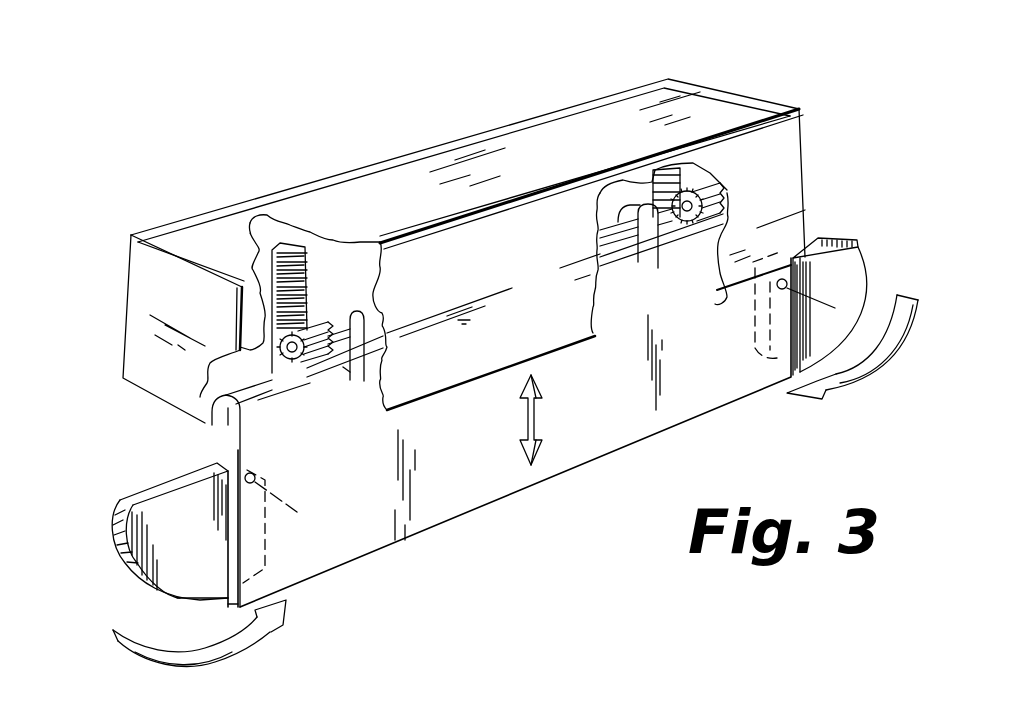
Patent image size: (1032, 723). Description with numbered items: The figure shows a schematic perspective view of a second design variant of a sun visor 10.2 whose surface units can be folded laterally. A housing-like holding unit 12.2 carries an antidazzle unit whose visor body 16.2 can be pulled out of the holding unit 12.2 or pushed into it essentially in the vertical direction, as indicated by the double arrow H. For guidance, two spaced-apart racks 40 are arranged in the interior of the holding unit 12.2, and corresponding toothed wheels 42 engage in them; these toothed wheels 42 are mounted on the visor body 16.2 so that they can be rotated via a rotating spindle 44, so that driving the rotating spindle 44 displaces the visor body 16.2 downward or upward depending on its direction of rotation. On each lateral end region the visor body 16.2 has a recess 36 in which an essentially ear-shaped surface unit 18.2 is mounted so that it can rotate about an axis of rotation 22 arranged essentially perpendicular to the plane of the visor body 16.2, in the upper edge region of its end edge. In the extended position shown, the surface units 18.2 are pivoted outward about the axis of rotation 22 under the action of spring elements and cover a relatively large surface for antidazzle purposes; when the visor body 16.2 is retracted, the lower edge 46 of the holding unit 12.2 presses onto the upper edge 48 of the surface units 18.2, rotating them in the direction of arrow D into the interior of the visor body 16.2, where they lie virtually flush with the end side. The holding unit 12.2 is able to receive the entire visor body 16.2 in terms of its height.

The sun visor 10.2 is at (822, 84).
The holding unit 12.2 is at (580, 132).
The visor body 16.2 is at (505, 483).
The surface units 18.2 is at (155, 518).
The axis of rotation 22 is at (293, 503).
The recess 36 is at (240, 553).
The racks 40 is at (281, 250).
The toothed wheels 42 is at (328, 320).
The rotating spindle 44 is at (377, 292).
The lower edge 46 is at (157, 406).
The upper edge 48 is at (180, 483).
The double arrow H is at (540, 425).
The arrow D is at (258, 641).